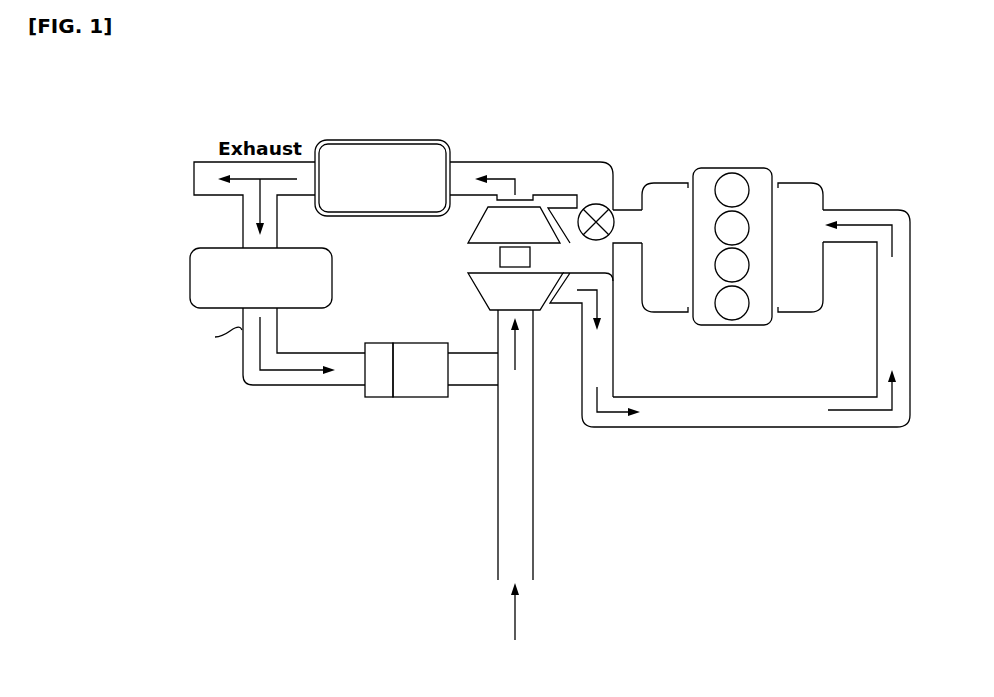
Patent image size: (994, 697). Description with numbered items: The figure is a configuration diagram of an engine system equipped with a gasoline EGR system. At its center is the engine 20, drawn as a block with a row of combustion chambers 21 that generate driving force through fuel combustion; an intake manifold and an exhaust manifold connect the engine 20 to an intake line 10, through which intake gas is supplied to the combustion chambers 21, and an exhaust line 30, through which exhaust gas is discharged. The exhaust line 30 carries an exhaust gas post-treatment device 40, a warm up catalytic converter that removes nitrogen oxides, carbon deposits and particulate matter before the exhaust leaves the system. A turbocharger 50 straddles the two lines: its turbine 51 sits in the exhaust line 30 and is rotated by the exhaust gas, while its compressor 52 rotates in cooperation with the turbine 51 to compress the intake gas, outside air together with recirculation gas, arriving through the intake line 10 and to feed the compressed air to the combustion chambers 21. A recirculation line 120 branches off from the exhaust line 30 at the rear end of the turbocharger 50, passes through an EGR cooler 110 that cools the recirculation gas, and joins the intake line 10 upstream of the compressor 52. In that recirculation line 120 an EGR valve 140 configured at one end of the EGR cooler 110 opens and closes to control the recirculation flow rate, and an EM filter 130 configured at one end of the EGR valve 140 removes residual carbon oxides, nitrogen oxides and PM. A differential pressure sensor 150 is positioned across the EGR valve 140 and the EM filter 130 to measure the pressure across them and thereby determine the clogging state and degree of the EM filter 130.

The intake line 10 is at (533, 340).
The engine 20 is at (795, 236).
The combustion chamber 21 is at (745, 175).
The exhaust line 30 is at (567, 208).
The exhaust gas post-treatment device 40 is at (393, 140).
The turbocharger 50 is at (459, 258).
The turbine 51 is at (476, 228).
The compressor 52 is at (478, 290).
The EGR cooler 110 is at (190, 275).
The recirculation line 120 is at (242, 348).
The EM filter 130 is at (377, 354).
The EGR valve 140 is at (420, 339).
The differential pressure sensor 150 is at (401, 376).